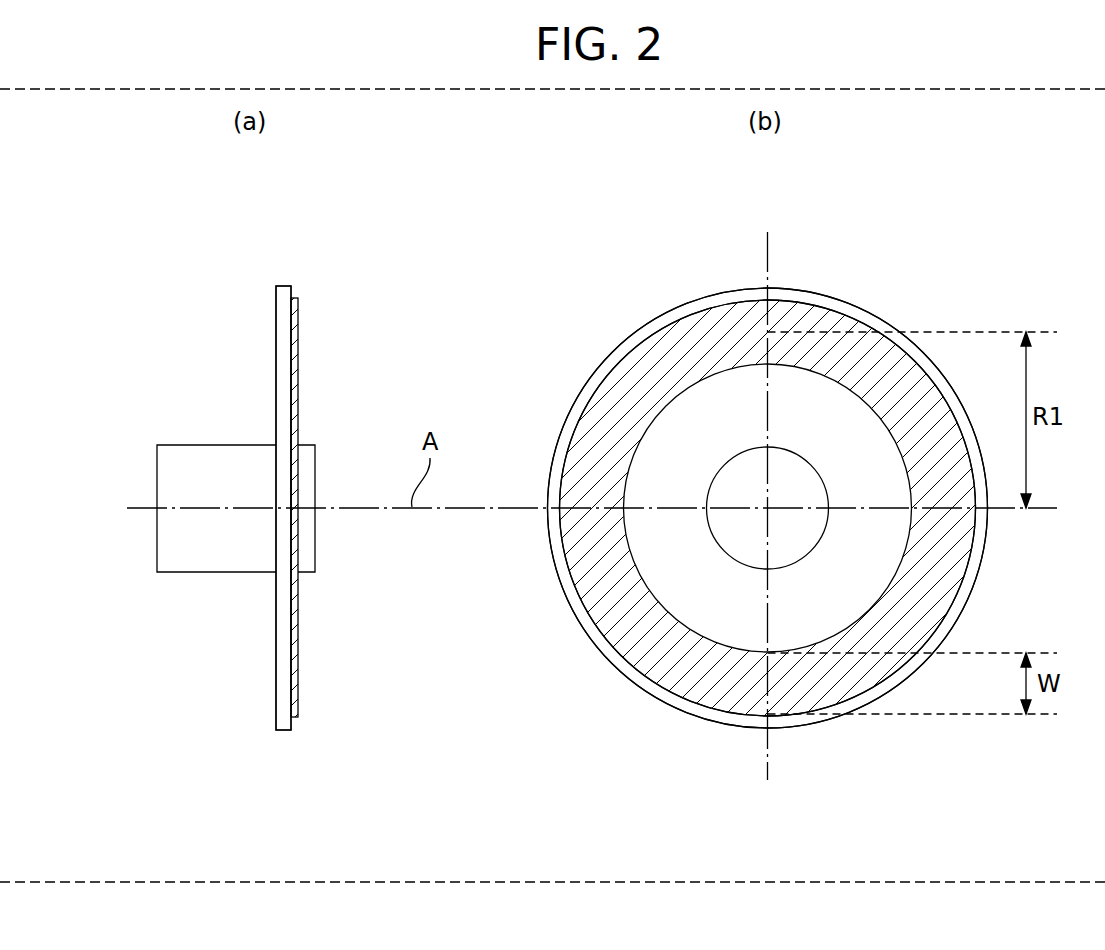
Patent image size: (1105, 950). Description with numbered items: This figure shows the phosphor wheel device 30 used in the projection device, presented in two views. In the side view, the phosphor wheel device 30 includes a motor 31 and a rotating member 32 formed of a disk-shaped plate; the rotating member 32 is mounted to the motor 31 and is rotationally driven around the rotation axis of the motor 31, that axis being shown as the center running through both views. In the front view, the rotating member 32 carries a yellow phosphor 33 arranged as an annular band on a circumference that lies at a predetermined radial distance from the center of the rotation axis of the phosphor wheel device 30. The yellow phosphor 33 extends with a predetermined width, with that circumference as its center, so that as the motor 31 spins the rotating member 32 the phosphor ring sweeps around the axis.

The phosphor wheel device 30 is at (233, 270).
The motor 31 is at (188, 562).
The rotating member 32 is at (283, 356).
The yellow phosphor 33 is at (295, 330).